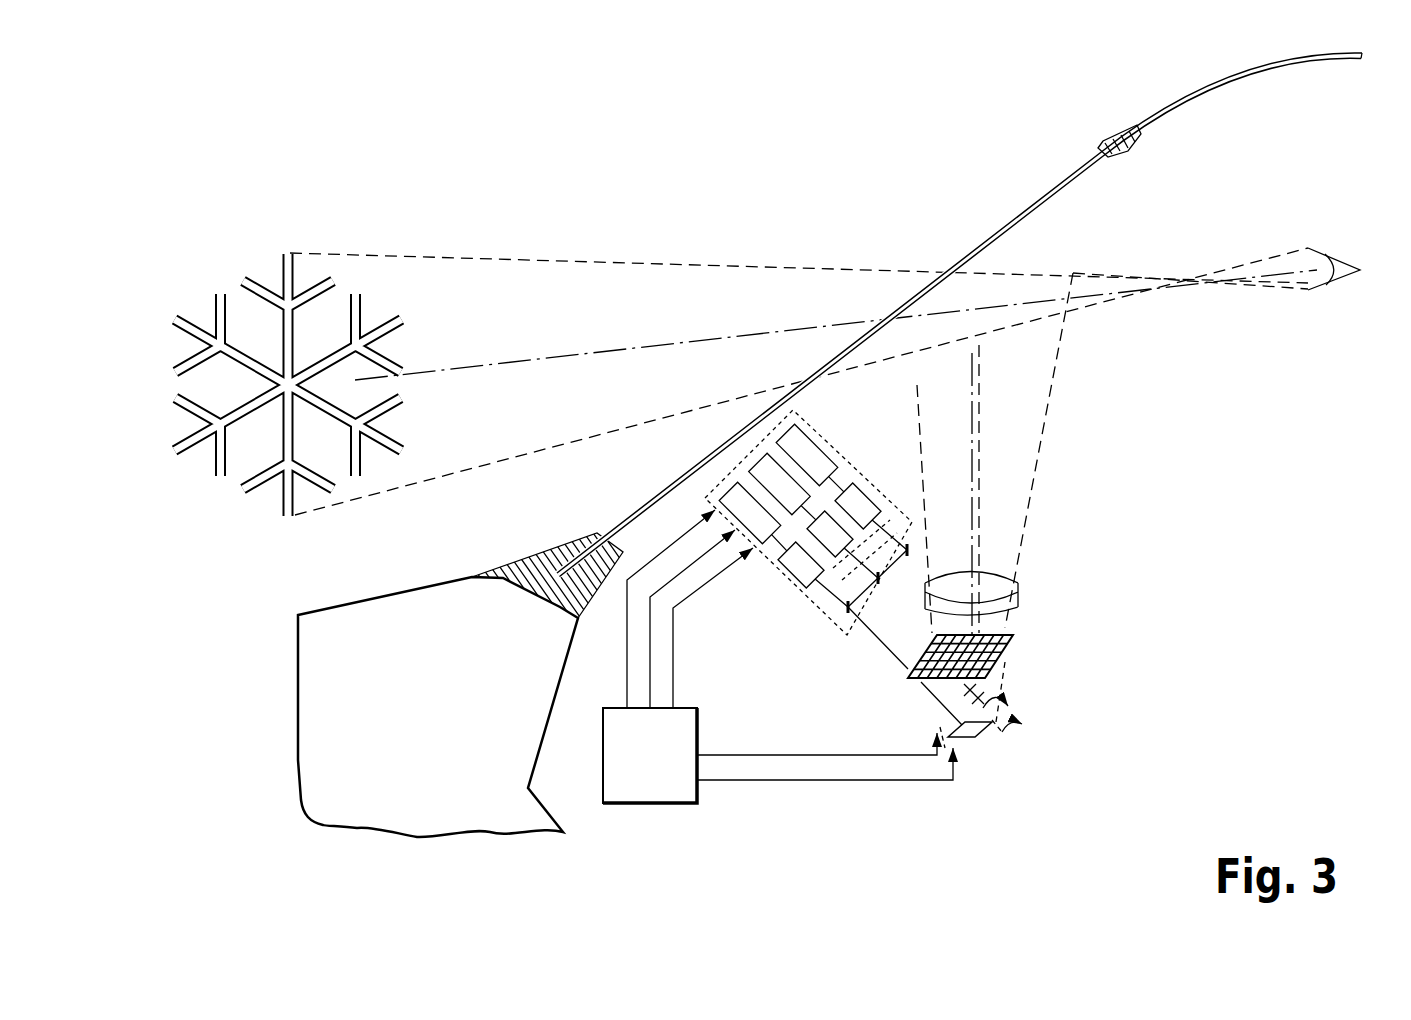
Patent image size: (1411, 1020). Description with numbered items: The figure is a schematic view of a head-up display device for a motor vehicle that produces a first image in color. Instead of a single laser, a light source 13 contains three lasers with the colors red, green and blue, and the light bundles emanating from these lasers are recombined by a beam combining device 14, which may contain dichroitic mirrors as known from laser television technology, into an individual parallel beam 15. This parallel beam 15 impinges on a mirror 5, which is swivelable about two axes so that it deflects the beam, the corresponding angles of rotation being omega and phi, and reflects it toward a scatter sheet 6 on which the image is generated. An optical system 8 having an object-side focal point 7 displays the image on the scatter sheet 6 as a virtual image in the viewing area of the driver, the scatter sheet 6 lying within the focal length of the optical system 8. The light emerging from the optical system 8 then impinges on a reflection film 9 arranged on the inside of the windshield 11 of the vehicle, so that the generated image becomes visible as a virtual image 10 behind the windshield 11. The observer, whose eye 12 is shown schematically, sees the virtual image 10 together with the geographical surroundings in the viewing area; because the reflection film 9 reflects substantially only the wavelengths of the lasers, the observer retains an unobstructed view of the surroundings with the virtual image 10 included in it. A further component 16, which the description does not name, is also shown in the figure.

The mirror 5 is at (990, 740).
The scatter sheet 6 is at (1013, 648).
The object-side focal point 7 is at (975, 690).
The optical system 8 is at (1007, 582).
The reflection film 9 is at (838, 362).
The virtual image 10 is at (292, 518).
The windshield 11 is at (1090, 166).
The eye 12 is at (1327, 292).
The light source 13 is at (778, 572).
The beam combining device 14 is at (842, 630).
The parallel beam 15 is at (890, 663).
The control unit 16 is at (652, 790).